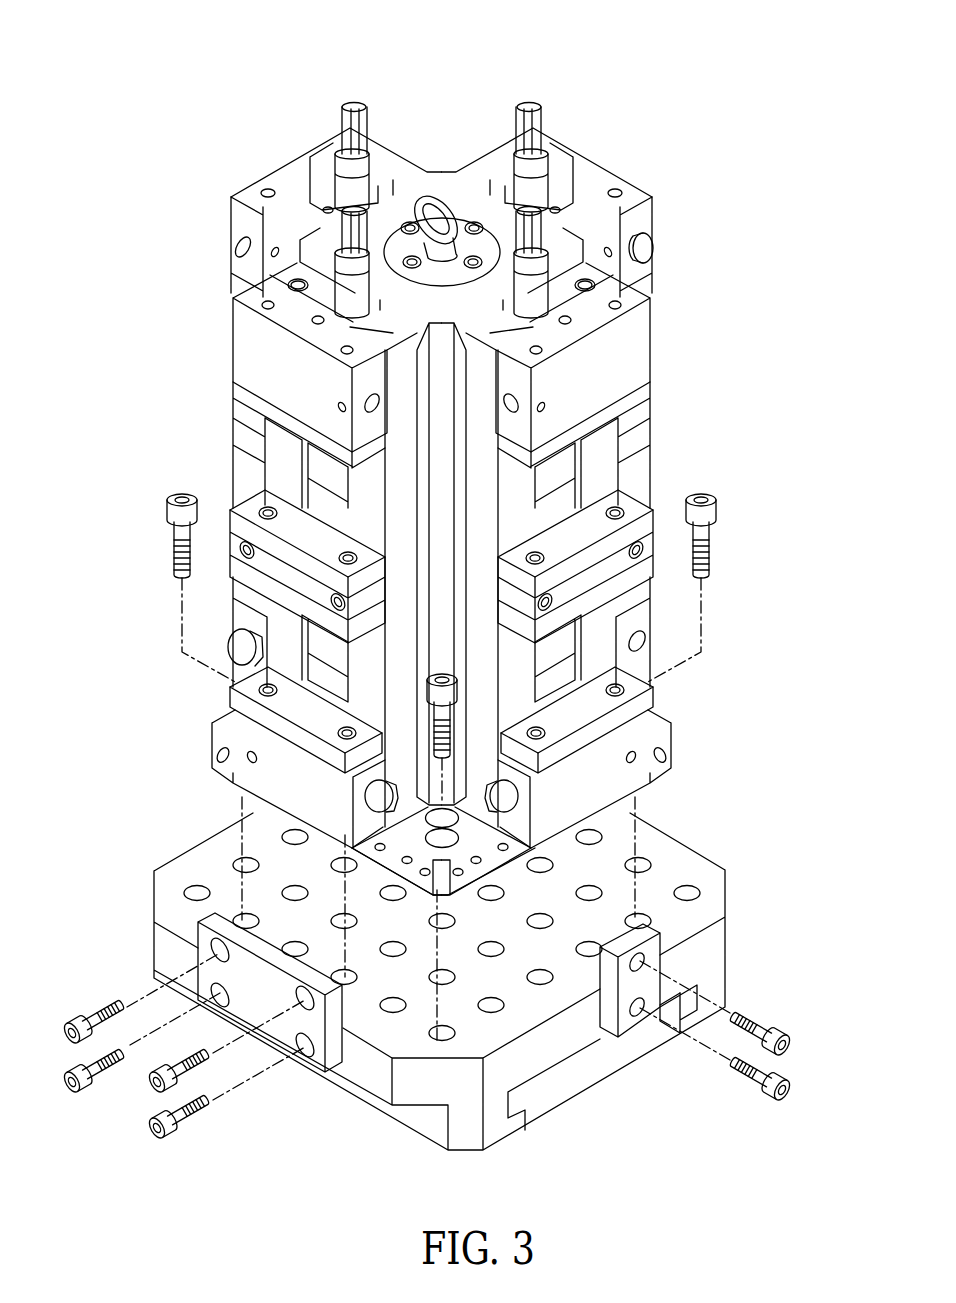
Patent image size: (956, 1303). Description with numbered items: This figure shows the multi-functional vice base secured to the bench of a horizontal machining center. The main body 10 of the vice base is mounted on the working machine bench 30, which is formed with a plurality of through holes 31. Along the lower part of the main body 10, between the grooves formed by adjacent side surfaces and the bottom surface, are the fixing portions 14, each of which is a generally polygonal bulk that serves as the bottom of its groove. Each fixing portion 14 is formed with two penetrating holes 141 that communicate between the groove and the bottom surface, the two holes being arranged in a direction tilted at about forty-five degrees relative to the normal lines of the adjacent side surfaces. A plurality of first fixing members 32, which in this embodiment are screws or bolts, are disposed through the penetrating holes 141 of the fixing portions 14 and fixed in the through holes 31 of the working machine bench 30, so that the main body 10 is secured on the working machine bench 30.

The main body 10 is at (407, 88).
The fixing portion 14 is at (473, 828).
The penetrating hole 141 is at (436, 840).
The working machine bench 30 is at (196, 843).
The through hole 31 is at (432, 1037).
The first fixing member 32 is at (182, 528).